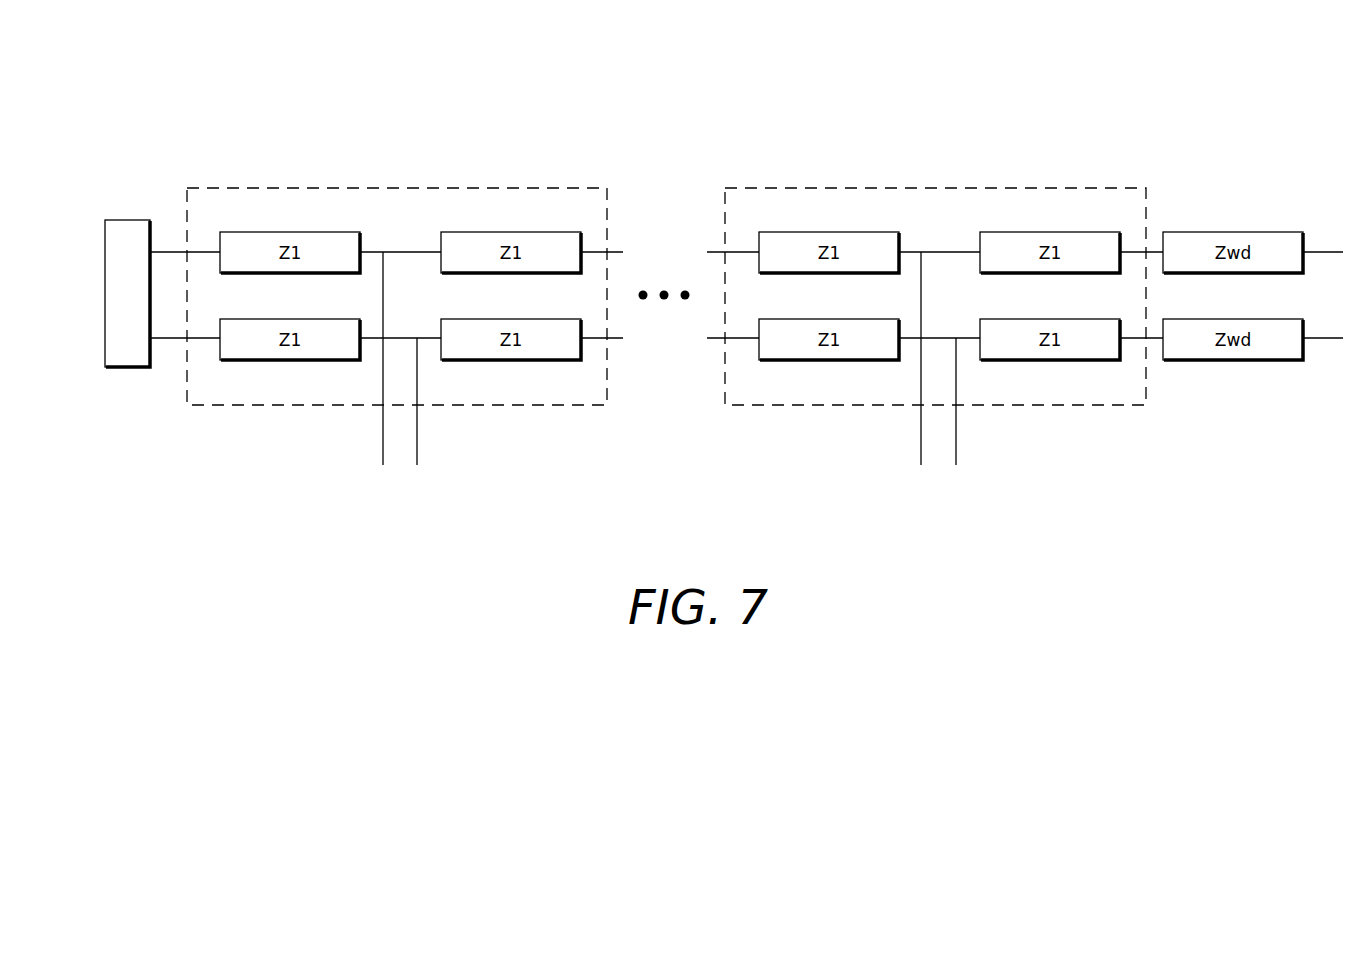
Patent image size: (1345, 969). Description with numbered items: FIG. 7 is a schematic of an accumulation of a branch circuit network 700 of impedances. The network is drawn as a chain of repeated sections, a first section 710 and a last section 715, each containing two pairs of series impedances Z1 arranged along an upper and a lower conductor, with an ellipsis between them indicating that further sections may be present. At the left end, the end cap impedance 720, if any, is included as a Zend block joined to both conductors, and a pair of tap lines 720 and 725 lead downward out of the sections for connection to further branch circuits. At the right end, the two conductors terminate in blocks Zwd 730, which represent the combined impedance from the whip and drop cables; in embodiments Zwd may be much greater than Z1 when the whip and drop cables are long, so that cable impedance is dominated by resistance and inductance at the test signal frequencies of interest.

The power distribution network 700 is at (580, 56).
The first stage with Z1 impedance segments 710 is at (428, 188).
The last stage with Z1 impedance segments 715 is at (917, 188).
The end cap impedance 720 is at (122, 220).
The tap line 725 is at (956, 445).
The combined whip and drop cable impedance 730 is at (1233, 232).